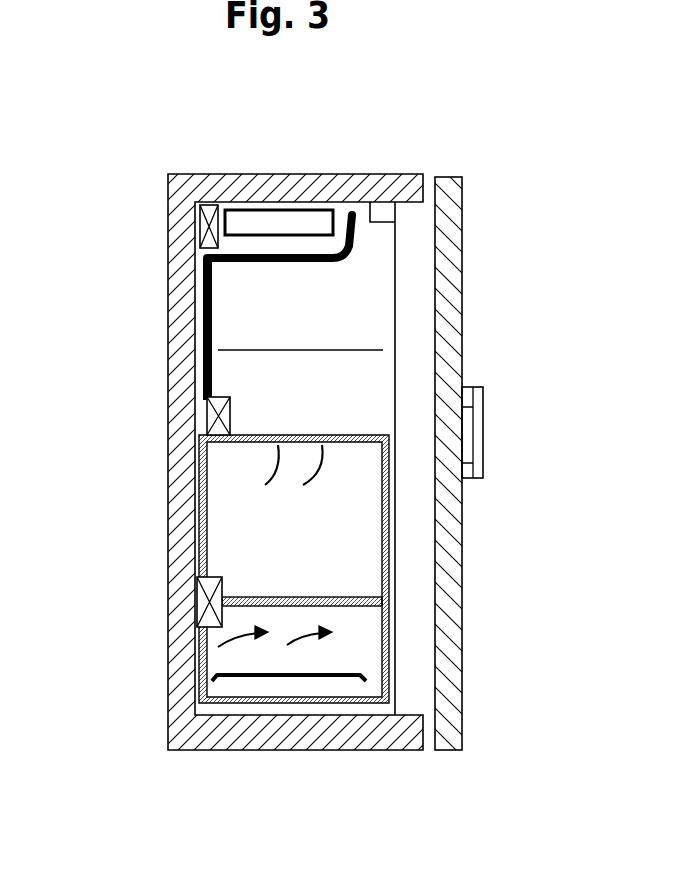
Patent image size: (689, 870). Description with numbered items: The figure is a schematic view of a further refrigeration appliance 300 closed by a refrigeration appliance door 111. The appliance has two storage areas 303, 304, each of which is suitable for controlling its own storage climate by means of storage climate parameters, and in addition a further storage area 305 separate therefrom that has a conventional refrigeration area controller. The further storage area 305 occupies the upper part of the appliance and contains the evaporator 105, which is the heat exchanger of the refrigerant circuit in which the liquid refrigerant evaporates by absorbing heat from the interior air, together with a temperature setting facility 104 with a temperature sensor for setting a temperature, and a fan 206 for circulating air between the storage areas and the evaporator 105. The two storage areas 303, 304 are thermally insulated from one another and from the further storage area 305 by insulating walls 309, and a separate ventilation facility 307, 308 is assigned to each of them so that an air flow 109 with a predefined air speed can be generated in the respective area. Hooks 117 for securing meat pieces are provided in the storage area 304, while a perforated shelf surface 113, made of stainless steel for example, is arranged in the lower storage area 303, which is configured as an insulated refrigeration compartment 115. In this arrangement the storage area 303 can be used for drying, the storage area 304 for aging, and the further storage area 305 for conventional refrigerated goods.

The refrigeration appliance 300 is at (155, 201).
The fan 206 is at (204, 224).
The evaporator 105 is at (302, 218).
The temperature setting facility 104 is at (385, 212).
The further storage area 305 is at (357, 293).
The refrigeration appliance door 111 is at (447, 363).
The ventilation facility 308 is at (208, 415).
The hooks 117 is at (317, 470).
The insulating walls 309 is at (205, 497).
The storage area 304 is at (358, 527).
The ventilation facility 307 is at (210, 605).
The air flow 109 is at (200, 633).
The storage area 303 is at (352, 638).
The perforated shelf surface 113 is at (347, 678).
The refrigeration compartment 115 is at (305, 697).